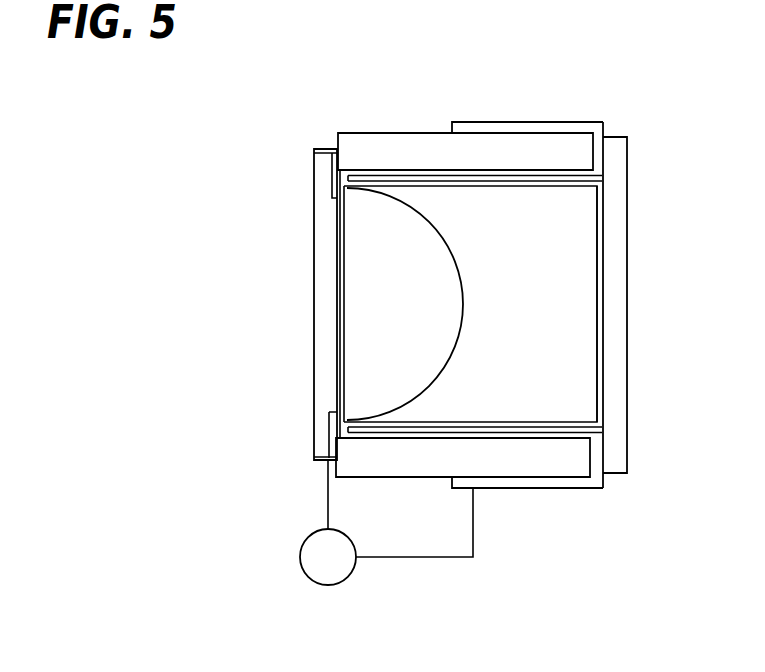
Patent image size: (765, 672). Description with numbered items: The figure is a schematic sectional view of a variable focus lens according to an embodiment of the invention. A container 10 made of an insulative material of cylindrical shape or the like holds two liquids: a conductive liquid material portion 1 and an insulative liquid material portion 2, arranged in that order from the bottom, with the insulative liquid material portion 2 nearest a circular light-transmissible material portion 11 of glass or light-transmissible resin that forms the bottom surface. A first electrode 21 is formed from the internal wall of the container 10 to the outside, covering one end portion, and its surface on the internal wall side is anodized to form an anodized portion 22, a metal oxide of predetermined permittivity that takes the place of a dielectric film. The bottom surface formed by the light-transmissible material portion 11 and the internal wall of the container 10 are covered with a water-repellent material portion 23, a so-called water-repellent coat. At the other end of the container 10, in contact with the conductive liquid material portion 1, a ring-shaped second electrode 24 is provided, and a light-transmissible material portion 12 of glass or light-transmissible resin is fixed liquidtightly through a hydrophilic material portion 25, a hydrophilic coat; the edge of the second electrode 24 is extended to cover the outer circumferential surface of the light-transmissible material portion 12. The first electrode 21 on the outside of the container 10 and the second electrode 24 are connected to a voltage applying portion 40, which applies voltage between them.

The conductive liquid material portion 1 is at (447, 307).
The insulative liquid material portion 2 is at (568, 350).
The container 10 is at (378, 144).
The light-transmissible material portion 11 is at (615, 392).
The light-transmissible material portion 12 is at (318, 383).
The first electrode 21 is at (550, 131).
The anodized portion 22 is at (603, 178).
The water-repellent material portion 23 is at (600, 228).
The second electrode 24 is at (330, 147).
The hydrophilic material portion 25 is at (338, 277).
The voltage applying portion 40 is at (325, 586).